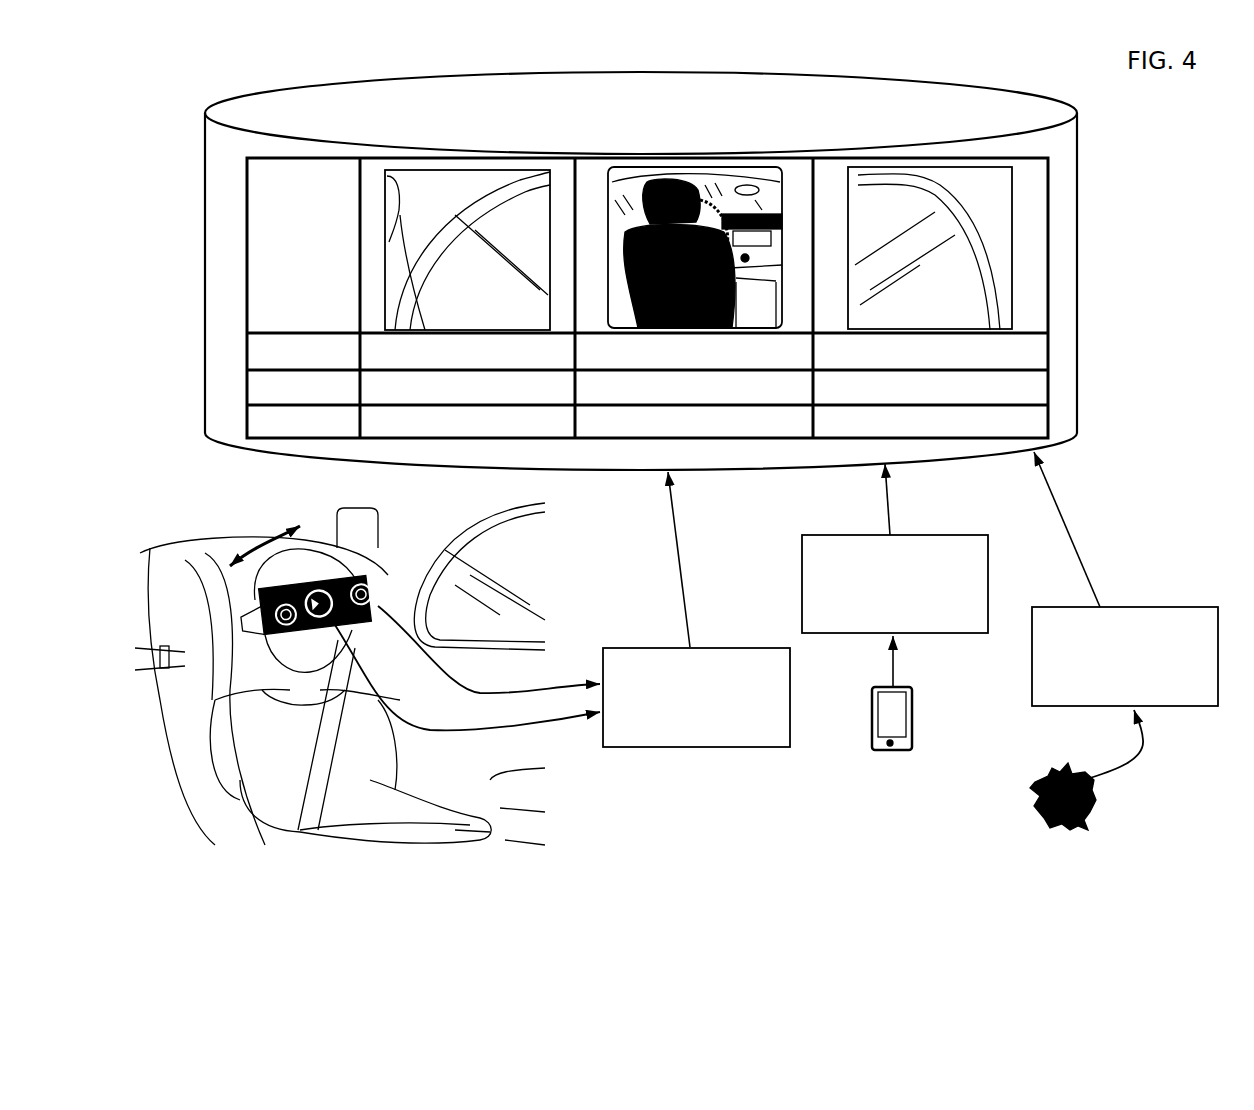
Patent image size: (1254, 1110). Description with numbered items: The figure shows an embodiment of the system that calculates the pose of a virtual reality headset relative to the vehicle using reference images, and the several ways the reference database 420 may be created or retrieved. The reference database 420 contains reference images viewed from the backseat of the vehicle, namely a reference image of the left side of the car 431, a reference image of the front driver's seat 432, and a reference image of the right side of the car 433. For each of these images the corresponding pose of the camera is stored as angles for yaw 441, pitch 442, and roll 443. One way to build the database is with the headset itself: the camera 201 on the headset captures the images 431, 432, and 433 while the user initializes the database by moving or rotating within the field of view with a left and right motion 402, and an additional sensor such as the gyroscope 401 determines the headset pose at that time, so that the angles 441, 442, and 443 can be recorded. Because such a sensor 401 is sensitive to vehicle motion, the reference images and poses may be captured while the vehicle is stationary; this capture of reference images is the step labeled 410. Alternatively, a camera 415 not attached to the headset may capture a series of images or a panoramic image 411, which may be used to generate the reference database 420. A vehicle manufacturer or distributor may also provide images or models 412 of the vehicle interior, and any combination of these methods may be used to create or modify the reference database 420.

The reference database 420 is at (1078, 268).
The reference image of left side of car 431 is at (436, 170).
The reference image of front driver's seat 432 is at (672, 165).
The reference image of right side of car 433 is at (896, 168).
The yaw 441 is at (247, 351).
The pitch 442 is at (247, 385).
The roll 443 is at (247, 421).
The gyroscope 401 is at (322, 585).
The left and right motion 402 is at (283, 560).
The camera 201 is at (365, 598).
The capture reference images step 410 is at (705, 747).
The panoramic image 411 is at (802, 568).
The images or models of vehicle interior 412 is at (1190, 607).
The camera not attached to headset 415 is at (896, 752).